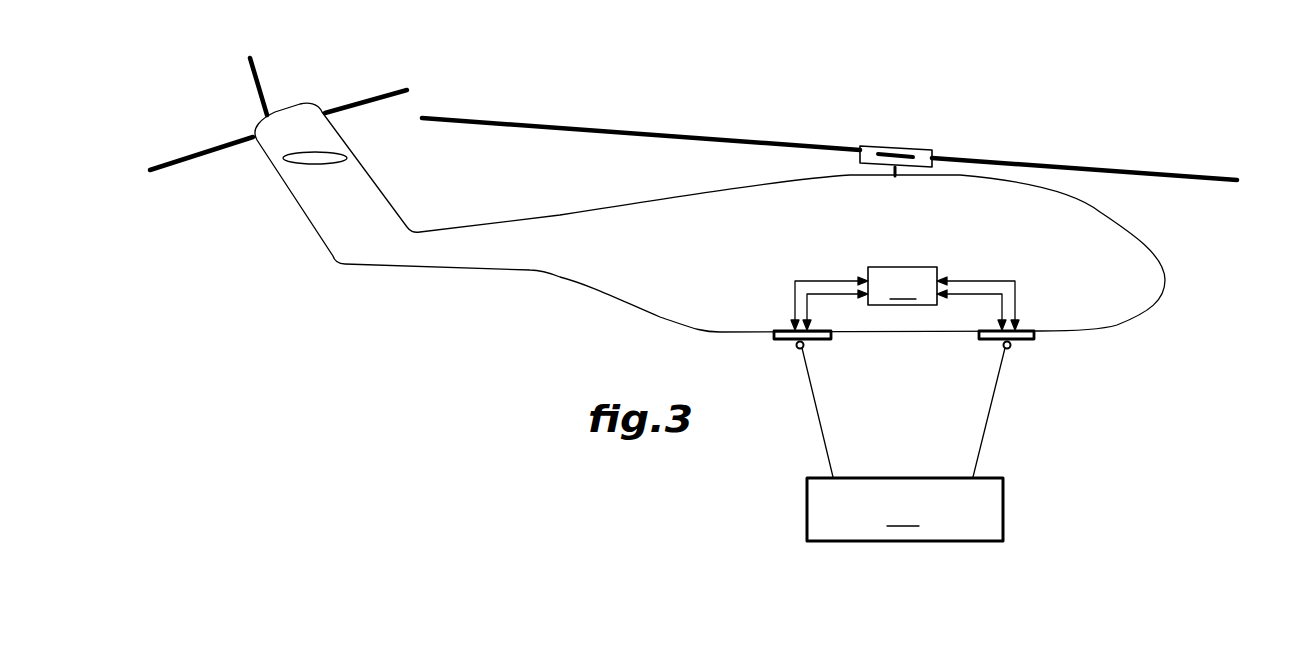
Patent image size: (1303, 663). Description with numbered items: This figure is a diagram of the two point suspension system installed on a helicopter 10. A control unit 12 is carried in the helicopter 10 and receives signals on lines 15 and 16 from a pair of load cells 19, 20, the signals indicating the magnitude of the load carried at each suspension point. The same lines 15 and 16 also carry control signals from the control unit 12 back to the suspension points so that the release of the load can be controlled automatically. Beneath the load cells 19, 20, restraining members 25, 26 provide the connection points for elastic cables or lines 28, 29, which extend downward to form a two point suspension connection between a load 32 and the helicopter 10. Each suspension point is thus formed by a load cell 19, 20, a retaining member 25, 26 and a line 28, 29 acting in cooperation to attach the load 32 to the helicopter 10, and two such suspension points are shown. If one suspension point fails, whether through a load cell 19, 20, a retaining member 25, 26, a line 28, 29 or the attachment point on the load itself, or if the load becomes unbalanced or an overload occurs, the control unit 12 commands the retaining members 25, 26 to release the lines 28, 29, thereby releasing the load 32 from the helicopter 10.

The helicopter 10 is at (1062, 135).
The control unit 12 is at (902, 286).
The line 15 is at (821, 284).
The line 16 is at (987, 284).
The load cell 19 is at (777, 343).
The load cell 20 is at (1028, 341).
The restraining member 25 is at (808, 343).
The restraining member 26 is at (997, 343).
The elastic cable 28 is at (825, 438).
The elastic cable 29 is at (983, 438).
The load 32 is at (905, 509).